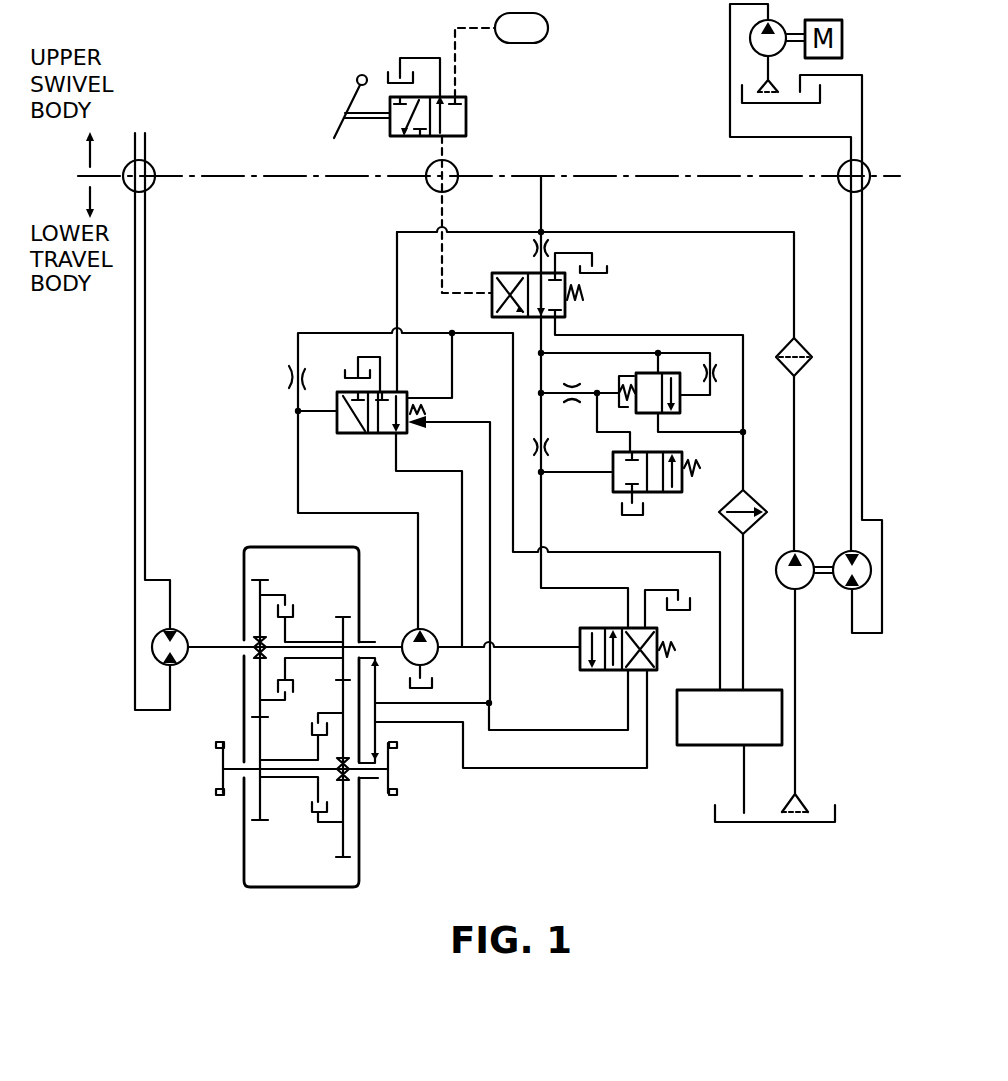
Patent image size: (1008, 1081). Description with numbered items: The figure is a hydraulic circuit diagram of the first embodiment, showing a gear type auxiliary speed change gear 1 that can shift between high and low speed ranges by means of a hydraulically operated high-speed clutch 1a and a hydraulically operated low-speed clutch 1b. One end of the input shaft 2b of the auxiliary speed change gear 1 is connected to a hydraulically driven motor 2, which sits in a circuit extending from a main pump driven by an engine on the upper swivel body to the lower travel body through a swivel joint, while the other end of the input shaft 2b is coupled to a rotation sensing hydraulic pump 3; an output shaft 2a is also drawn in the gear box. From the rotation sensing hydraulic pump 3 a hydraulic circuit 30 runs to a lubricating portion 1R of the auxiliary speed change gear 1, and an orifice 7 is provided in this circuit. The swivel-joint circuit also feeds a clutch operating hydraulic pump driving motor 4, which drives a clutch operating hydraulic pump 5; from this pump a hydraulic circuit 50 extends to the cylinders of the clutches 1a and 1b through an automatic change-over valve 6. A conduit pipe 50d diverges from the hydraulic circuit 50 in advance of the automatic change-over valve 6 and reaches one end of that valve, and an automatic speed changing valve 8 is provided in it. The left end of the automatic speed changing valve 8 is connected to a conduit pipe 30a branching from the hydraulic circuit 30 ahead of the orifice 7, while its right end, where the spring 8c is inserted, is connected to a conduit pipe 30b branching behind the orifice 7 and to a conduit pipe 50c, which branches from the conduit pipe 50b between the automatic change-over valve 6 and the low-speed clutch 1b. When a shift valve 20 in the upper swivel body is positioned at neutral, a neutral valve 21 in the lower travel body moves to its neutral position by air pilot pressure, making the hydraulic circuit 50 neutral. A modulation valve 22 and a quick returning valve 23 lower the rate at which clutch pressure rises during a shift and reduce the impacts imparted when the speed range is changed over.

The auxiliary speed change gear 1 is at (243, 575).
The high-speed clutch 1a is at (316, 812).
The low-speed clutch 1b is at (288, 610).
The lubricating portion 1R is at (708, 747).
The hydraulically driven motor 2 is at (188, 660).
The output shaft 2a is at (236, 773).
The input shaft 2b is at (224, 646).
The rotation sensing hydraulic pump 3 is at (405, 626).
The clutch operating hydraulic pump driving motor 4 is at (845, 590).
The clutch operating hydraulic pump 5 is at (790, 592).
The automatic change-over valve 6 is at (595, 672).
The orifice 7 is at (288, 378).
The automatic speed changing valve 8 is at (355, 434).
The spring 8c is at (427, 408).
The shift valve 20 is at (466, 117).
The neutral valve 21 is at (567, 310).
The modulation valve 22 is at (633, 373).
The quick returning valve 23 is at (613, 460).
The hydraulic circuit 30 is at (298, 453).
The conduit pipe 30a is at (328, 400).
The conduit pipe 30b is at (452, 362).
The hydraulic circuit 50 is at (678, 232).
The conduit pipe 50b is at (543, 732).
The conduit pipe 50c is at (490, 595).
The conduit pipe 50d is at (397, 250).